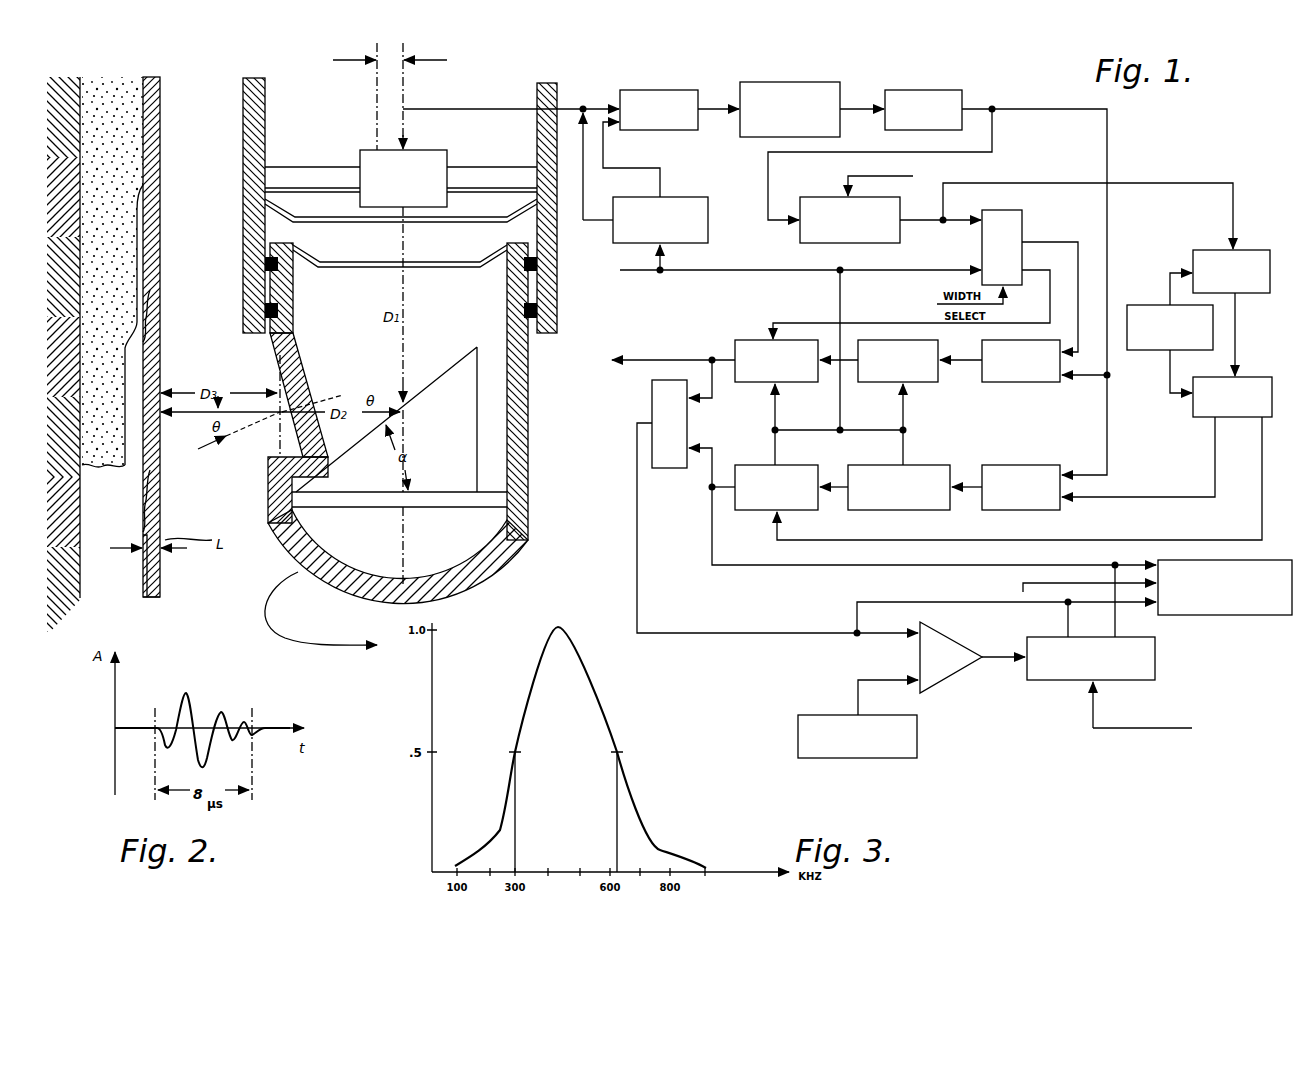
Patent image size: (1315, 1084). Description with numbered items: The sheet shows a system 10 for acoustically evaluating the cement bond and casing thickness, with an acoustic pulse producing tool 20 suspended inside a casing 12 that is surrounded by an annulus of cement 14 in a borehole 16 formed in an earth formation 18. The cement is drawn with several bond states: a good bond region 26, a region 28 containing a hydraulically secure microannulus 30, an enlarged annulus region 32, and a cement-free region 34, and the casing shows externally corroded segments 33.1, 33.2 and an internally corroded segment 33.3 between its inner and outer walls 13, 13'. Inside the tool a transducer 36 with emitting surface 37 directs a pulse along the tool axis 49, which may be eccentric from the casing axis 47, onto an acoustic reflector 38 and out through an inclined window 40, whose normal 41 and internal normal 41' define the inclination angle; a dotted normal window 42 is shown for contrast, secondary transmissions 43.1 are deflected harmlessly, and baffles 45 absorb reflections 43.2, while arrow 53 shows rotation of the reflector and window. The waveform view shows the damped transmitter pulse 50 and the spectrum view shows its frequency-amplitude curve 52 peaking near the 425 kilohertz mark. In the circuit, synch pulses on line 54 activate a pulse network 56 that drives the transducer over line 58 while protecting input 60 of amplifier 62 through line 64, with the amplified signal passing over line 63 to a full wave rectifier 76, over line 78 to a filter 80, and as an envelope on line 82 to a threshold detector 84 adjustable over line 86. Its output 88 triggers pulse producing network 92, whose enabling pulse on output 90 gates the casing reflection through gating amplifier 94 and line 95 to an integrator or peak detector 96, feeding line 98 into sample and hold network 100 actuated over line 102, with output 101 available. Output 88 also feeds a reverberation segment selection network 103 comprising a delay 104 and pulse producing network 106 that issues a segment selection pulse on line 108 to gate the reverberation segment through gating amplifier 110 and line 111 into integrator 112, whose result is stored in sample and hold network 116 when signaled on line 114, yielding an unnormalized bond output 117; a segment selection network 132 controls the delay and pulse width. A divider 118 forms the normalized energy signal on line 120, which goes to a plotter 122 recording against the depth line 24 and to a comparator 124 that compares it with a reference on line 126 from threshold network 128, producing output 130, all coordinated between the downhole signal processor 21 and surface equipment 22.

In FIG. 1, the system 10 is at (505, 589).
In FIG. 1, the casing 12 is at (160, 582).
In FIG. 1, the casing inner wall 13 is at (175, 611).
In FIG. 1, the casing outer wall 13' is at (123, 566).
In FIG. 1, the annulus of cement 14 is at (112, 470).
In FIG. 1, the borehole 16 is at (80, 590).
In FIG. 1, the earth formation 18 is at (58, 603).
In FIG. 1, the acoustic pulse producing tool 20 is at (528, 460).
In FIG. 1, the signal processor 21 is at (1168, 162).
In FIG. 1, the surface controls and signal processing equipment 22 is at (1058, 704).
In FIG. 1, the depth signal line 24 is at (1117, 730).
In FIG. 1, the good bond region 26 is at (167, 152).
In FIG. 1, the microannulus region 28 is at (169, 226).
In FIG. 1, the microannulus 30 is at (143, 278).
In FIG. 1, the enlarged annulus region 32 is at (178, 366).
In FIG. 1, the externally corroded segment 33.1 is at (143, 508).
In FIG. 1, the externally corroded segment 33.2 is at (143, 305).
In FIG. 1, the internally corroded segment 33.3 is at (143, 187).
In FIG. 1, the cement-free region 34 is at (172, 521).
In FIG. 1, the transducer 36 is at (440, 150).
In FIG. 1, the transducer surface 37 is at (440, 210).
In FIG. 1, the acoustic reflector 38 is at (447, 340).
In FIG. 1, the window 40 is at (296, 375).
In FIG. 1, the normal to window surface 41 is at (225, 446).
In FIG. 1, the internal window normal 41' is at (406, 366).
In FIG. 1, the normal window 42 is at (272, 372).
In FIG. 1, the secondary transmission 43.1 is at (280, 412).
In FIG. 1, the acoustic reflection 43.2 is at (280, 412).
In FIG. 1, the baffles 45 is at (300, 208).
In FIG. 1, the casing central axis 47 is at (377, 90).
In FIG. 1, the tool axis 49 is at (403, 80).
In FIG. 2, the transmitter pulse 50 is at (188, 694).
In FIG. 3, the frequency-amplitude curve 52 is at (607, 708).
In FIG. 1, the rotation arrow 53 is at (297, 632).
In FIG. 1, the synch pulse line 54 is at (697, 272).
In FIG. 1, the pulse network 56 is at (708, 226).
In FIG. 1, the drive pulse line 58 is at (598, 222).
In FIG. 1, the amplifier input 60 is at (606, 105).
In FIG. 1, the amplifier 62 is at (676, 90).
In FIG. 1, the amplifier output 63 is at (718, 107).
In FIG. 1, the protection signal line 64 is at (662, 185).
In FIG. 1, the full wave rectifier 76 is at (803, 82).
In FIG. 1, the rectifier output line 78 is at (860, 108).
In FIG. 1, the filter 80 is at (948, 90).
In FIG. 1, the envelope signal line 82 is at (985, 108).
In FIG. 1, the threshold detector 84 is at (846, 244).
In FIG. 1, the selector control line 86 is at (900, 178).
In FIG. 1, the threshold detector output 88 is at (922, 228).
In FIG. 1, the enabling pulse output 90 is at (1060, 242).
In FIG. 1, the pulse producing network 92 is at (1012, 210).
In FIG. 1, the gating amplifier 94 is at (1037, 383).
In FIG. 1, the gated amplifier output 95 is at (966, 364).
In FIG. 1, the integrator network or peak amplitude detector 96 is at (925, 385).
In FIG. 1, the casing amplitude signal line 98 is at (855, 370).
In FIG. 1, the sample and hold network 100 is at (747, 340).
In FIG. 1, the sample and hold output 101 is at (678, 360).
In FIG. 1, the sample pulse line 102 is at (866, 324).
In FIG. 1, the reverberation segment selection network 103 is at (1250, 232).
In FIG. 1, the delay 104 is at (1205, 250).
In FIG. 1, the pulse producing network 106 is at (1258, 377).
In FIG. 1, the segment selection pulse line 108 is at (1180, 497).
In FIG. 1, the gating amplifier 110 is at (1025, 510).
In FIG. 1, the gated amplifier output 111 is at (966, 486).
In FIG. 1, the integrator 112 is at (892, 510).
In FIG. 1, the sample activation line 114 is at (1188, 540).
In FIG. 1, the sample and hold network 116 is at (754, 512).
In FIG. 1, the bond signal output 117 is at (724, 485).
In FIG. 1, the divider 118 is at (672, 470).
In FIG. 1, the normalized energy output line 120 is at (640, 582).
In FIG. 1, the plotter 122 is at (1155, 668).
In FIG. 1, the comparator 124 is at (957, 683).
In FIG. 1, the reference signal line 126 is at (878, 680).
In FIG. 1, the threshold network 128 is at (917, 750).
In FIG. 1, the comparator output 130 is at (1257, 615).
In FIG. 1, the segment selection network 132 is at (1138, 305).
In FIG. 3, the center frequency 425 is at (557, 868).